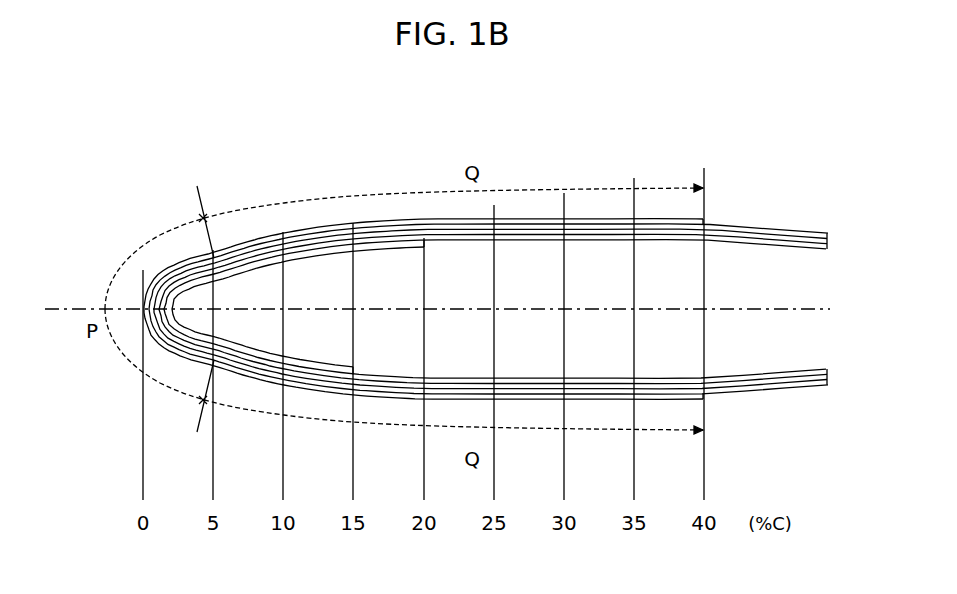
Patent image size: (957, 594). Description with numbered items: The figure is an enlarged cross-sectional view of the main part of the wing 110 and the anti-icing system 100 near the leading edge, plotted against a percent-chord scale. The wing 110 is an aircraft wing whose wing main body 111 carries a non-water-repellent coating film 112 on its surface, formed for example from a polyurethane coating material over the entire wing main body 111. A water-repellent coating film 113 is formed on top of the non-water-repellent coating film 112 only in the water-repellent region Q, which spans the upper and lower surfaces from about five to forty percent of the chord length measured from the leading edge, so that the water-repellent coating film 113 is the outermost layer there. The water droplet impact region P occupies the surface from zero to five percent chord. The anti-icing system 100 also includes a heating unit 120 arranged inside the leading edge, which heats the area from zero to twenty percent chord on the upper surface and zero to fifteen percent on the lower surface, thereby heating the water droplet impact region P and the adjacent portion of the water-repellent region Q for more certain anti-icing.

The anti-icing system 100 is at (497, 256).
The wing 110 is at (810, 229).
The wing main body 111 is at (788, 233).
The non-water-repellent coating film 112 is at (744, 227).
The water-repellent coating film 113 is at (684, 220).
The heating unit 120 is at (418, 247).